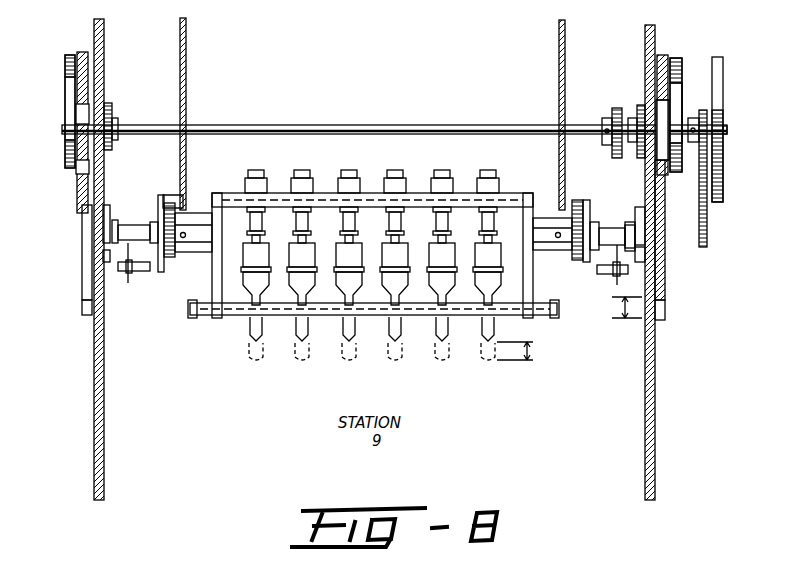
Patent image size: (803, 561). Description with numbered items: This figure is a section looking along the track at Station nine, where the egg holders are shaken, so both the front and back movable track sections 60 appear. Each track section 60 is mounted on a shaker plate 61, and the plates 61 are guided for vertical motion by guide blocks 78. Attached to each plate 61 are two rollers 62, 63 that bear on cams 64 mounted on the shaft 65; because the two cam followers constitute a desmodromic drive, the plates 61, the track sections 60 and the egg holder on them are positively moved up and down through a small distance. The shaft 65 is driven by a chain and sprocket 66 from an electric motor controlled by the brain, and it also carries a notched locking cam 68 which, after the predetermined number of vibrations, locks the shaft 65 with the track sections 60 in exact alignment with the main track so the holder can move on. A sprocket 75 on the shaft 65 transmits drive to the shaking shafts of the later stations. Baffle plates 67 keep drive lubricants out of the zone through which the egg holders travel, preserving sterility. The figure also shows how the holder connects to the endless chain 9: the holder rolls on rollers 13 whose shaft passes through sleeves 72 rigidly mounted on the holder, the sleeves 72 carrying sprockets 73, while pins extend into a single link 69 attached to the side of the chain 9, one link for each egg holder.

The endless chain 9 is at (604, 270).
The rollers 13 is at (634, 228).
The track section 60 is at (106, 212).
The shaker plates 61 is at (85, 283).
The roller 62 is at (66, 60).
The roller 63 is at (65, 153).
The cams 64 is at (65, 100).
The shaft 65 is at (287, 125).
The chain and sprocket 66 is at (707, 118).
The baffle plates 67 is at (186, 36).
The locking cam 68 is at (723, 70).
The link 69 is at (612, 297).
The sleeves 72 is at (190, 213).
The sprockets 73 is at (172, 260).
The sprocket 75 is at (618, 108).
The guide blocks 78 is at (82, 255).